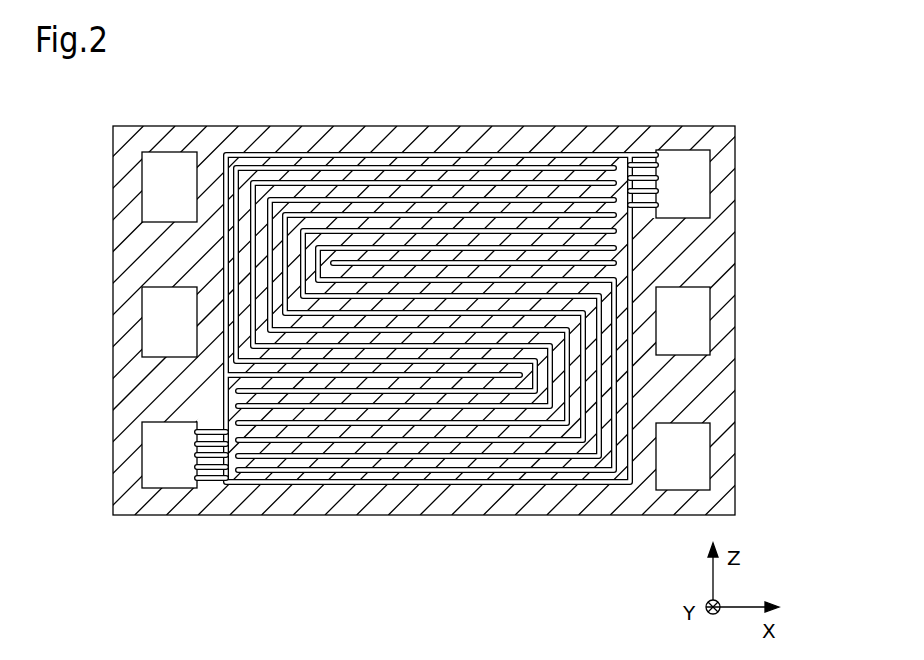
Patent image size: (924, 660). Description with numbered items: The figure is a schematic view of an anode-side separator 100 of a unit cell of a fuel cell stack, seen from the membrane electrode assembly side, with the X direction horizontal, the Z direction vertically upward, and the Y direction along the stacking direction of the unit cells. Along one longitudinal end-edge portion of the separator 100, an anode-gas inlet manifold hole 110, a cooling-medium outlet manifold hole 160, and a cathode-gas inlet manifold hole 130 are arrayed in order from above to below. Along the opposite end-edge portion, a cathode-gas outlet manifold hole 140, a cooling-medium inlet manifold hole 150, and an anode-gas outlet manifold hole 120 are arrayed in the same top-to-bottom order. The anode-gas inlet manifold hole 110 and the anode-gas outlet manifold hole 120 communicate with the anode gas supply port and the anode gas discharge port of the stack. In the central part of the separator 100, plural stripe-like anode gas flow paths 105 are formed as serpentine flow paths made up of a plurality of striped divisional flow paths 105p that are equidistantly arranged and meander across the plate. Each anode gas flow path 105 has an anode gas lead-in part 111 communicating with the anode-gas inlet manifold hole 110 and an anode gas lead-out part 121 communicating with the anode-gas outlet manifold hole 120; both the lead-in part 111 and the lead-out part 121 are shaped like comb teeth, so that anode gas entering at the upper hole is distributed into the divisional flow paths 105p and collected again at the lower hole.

The anode-side separator 100 is at (178, 126).
The anode gas flow paths 105 is at (441, 278).
The striped divisional flow paths 105p is at (445, 177).
The anode-gas inlet manifold hole 110 is at (710, 183).
The anode gas lead-in part 111 is at (643, 152).
The anode-gas outlet manifold hole 120 is at (142, 452).
The anode gas lead-out part 121 is at (207, 488).
The cathode-gas inlet manifold hole 130 is at (710, 458).
The cathode-gas outlet manifold hole 140 is at (142, 188).
The cooling-medium inlet manifold hole 150 is at (142, 328).
The cooling-medium outlet manifold hole 160 is at (710, 326).